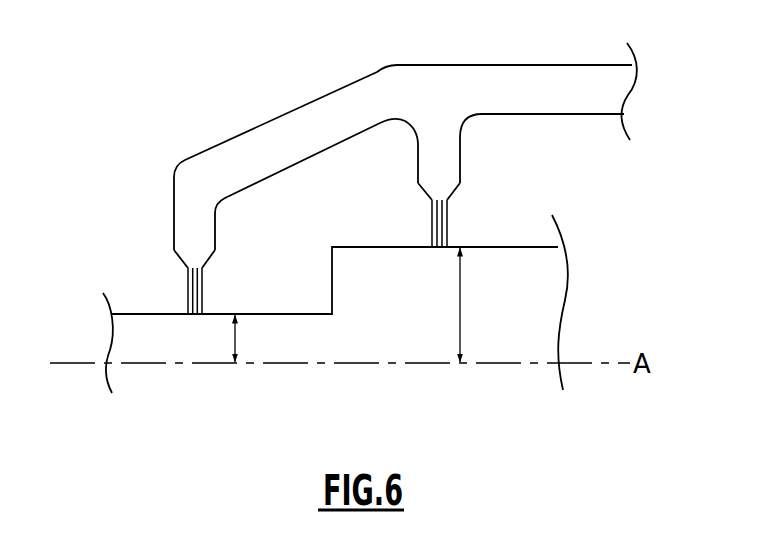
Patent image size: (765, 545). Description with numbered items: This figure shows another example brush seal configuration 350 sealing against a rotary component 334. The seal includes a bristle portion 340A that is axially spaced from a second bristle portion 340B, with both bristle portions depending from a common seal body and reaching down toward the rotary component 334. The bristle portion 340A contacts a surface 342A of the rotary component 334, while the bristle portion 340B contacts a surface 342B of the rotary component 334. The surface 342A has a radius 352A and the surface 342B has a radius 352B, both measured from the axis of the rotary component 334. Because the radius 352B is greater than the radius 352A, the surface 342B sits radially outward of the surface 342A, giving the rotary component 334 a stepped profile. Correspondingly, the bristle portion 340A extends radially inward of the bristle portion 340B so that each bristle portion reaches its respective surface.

The brush seal configuration 350 is at (148, 78).
The bristle portion 340A is at (187, 295).
The bristle portion 340B is at (428, 225).
The surface 342A is at (259, 314).
The surface 342B is at (498, 247).
The radius 352A is at (235, 337).
The radius 352B is at (460, 320).
The rotary component 334 is at (395, 337).